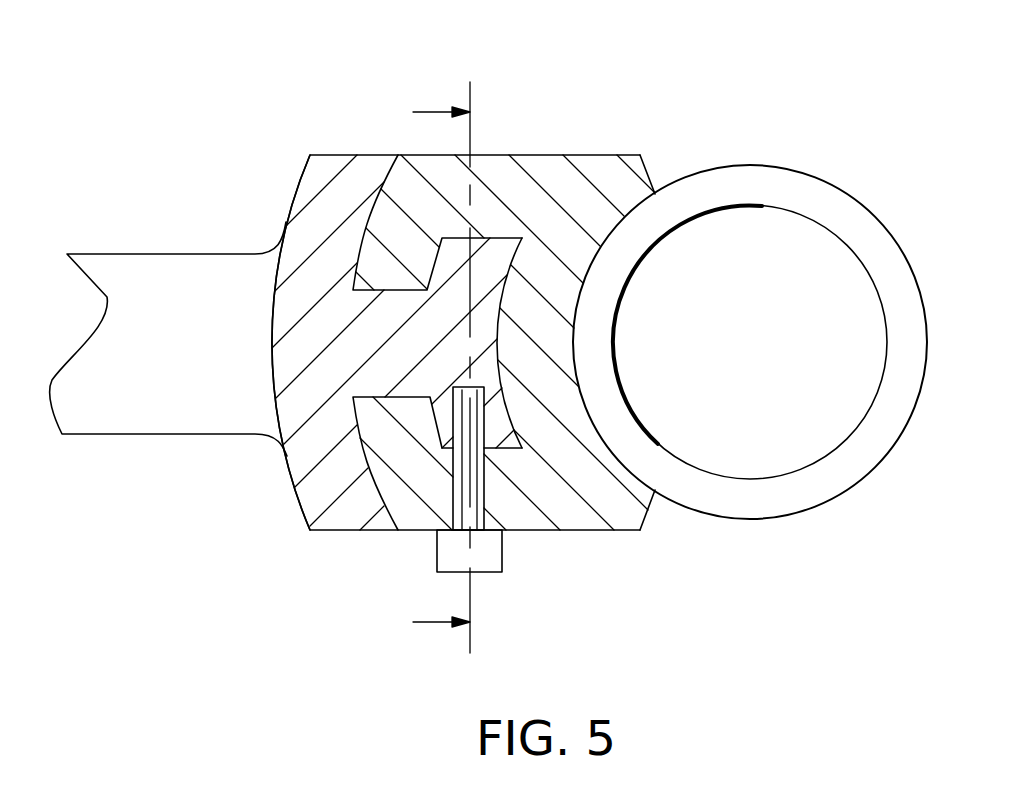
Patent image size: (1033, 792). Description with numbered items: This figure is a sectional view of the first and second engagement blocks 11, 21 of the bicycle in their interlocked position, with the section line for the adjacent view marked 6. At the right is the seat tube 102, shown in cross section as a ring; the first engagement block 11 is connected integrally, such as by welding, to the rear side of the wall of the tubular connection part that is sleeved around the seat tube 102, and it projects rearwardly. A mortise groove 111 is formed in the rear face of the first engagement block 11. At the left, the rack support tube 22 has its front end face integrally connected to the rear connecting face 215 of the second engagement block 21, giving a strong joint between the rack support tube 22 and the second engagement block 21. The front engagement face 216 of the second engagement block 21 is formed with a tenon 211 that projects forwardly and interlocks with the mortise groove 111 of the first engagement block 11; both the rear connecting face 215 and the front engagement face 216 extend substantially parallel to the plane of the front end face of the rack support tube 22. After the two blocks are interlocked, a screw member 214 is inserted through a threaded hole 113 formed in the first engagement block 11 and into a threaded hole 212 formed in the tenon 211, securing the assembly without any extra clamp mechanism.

The first engagement block 11 is at (600, 172).
The seat tube 102 is at (868, 233).
The mortise groove 111 is at (502, 298).
The threaded hole 113 is at (437, 527).
The second engagement block 21 is at (325, 487).
The tenon 211 is at (495, 255).
The threaded hole 212 is at (485, 425).
The screw member 214 is at (488, 555).
The rear connecting face 215 is at (286, 221).
The front engagement face 216 is at (373, 213).
The rack support tube 22 is at (167, 310).
The section line 6- 6 is at (441, 370).